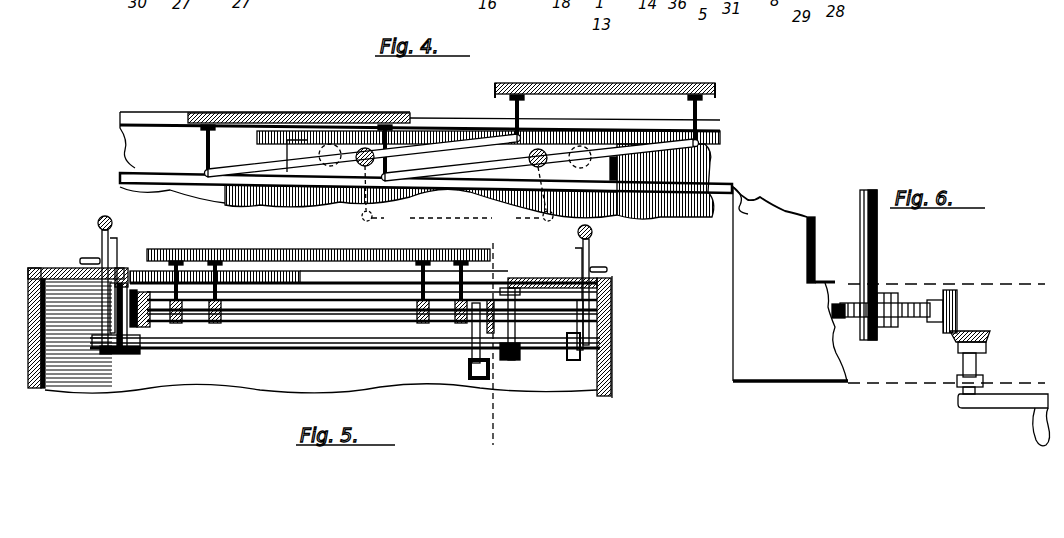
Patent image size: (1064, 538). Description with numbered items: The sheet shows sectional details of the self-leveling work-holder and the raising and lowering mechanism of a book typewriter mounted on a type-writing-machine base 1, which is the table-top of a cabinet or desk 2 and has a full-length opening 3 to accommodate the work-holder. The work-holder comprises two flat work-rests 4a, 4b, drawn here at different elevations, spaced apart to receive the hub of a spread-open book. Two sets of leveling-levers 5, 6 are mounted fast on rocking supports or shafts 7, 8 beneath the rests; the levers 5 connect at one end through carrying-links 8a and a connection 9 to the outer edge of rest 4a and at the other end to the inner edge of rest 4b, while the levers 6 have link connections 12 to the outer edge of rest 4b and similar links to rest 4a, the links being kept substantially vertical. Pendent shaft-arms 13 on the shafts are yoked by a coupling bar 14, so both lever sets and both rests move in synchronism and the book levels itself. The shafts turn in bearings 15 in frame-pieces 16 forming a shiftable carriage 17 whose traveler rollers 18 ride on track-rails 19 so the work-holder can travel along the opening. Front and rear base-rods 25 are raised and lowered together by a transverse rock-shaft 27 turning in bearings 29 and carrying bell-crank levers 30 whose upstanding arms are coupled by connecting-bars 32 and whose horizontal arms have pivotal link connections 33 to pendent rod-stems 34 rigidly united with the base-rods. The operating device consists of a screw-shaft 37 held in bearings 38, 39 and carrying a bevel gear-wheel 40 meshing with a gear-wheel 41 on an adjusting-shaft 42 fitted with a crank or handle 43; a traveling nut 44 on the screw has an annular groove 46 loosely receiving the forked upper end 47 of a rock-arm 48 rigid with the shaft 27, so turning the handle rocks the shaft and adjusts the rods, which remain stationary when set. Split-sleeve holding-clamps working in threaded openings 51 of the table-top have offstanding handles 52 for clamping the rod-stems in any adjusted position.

In FIG. 4, the type-writing-machine base 1 is at (175, 110).
In FIG. 5, the type-writing-machine base 1 is at (58, 261).
In FIG. 6, the type-writing-machine base 1 is at (731, 293).
In FIG. 4, the typewriter cabinet or desk 2 is at (723, 141).
In FIG. 5, the typewriter cabinet or desk 2 is at (603, 379).
In FIG. 6, the typewriter cabinet or desk 2 is at (809, 299).
In FIG. 4, the opening 3 is at (460, 125).
In FIG. 5, the opening 3 is at (308, 281).
In FIG. 6, the opening 3 is at (832, 241).
In FIG. 4, the work-rest 4a is at (283, 112).
In FIG. 5, the work-rest 4a is at (400, 252).
In FIG. 4, the work-rest 4b is at (601, 84).
In FIG. 4, the leveling-levers 5 is at (276, 154).
In FIG. 5, the leveling-levers 5 is at (195, 350).
In FIG. 4, the leveling-levers 6 is at (641, 137).
In FIG. 5, the leveling-levers 6 is at (224, 322).
In FIG. 4, the rocking support or shaft 7 is at (388, 140).
In FIG. 5, the rocking support or shaft 7 is at (340, 322).
In FIG. 4, the rocking support or shaft 8 is at (531, 237).
In FIG. 5, the rocking support or shaft 8 is at (493, 351).
In FIG. 4, the carrying-links 8a is at (524, 107).
In FIG. 5, the carrying-links 8a is at (470, 283).
In FIG. 4, the connection 9 is at (213, 125).
In FIG. 5, the connection 9 is at (466, 266).
In FIG. 4, the link connections 12 is at (422, 126).
In FIG. 5, the link connections 12 is at (428, 266).
In FIG. 5, the shaft-arms 13 is at (463, 335).
In FIG. 5, the coupling or connecting bar 14 is at (440, 425).
In FIG. 5, the bearings 15 is at (480, 376).
In FIG. 4, the frame-pieces 16 is at (611, 194).
In FIG. 5, the frame-pieces 16 is at (158, 350).
In FIG. 5, the shiftable carriage 17 is at (308, 327).
In FIG. 4, the traveler rollers 18 is at (366, 148).
In FIG. 5, the traveler rollers 18 is at (125, 312).
In FIG. 4, the track-rails 19 is at (457, 197).
In FIG. 5, the track-rails 19 is at (135, 355).
In FIG. 5, the base-rods 25 is at (109, 207).
In FIG. 5, the rock-shaft 27 is at (272, 352).
In FIG. 6, the rock-shaft 27 is at (860, 203).
In FIG. 5, the bearings 29 is at (108, 356).
In FIG. 5, the bell-crank levers 30 is at (105, 330).
In FIG. 5, the connecting-bars 32 is at (118, 282).
In FIG. 5, the pivotal link connections 33 is at (598, 333).
In FIG. 5, the rod-stems 34 is at (114, 242).
In FIG. 6, the screw-shaft 37 is at (914, 320).
In FIG. 6, the bearing 38 is at (833, 318).
In FIG. 6, the bearing 39 is at (934, 300).
In FIG. 6, the bevel gear-wheel 40 is at (958, 305).
In FIG. 6, the gear-wheel 41 is at (989, 334).
In FIG. 6, the adjusting-shaft 42 is at (983, 362).
In FIG. 6, the crank or handle 43 is at (1007, 410).
In FIG. 6, the traveling nut 44 is at (900, 298).
In FIG. 6, the annular groove 46 is at (882, 328).
In FIG. 6, the forked upper end 47 is at (887, 293).
In FIG. 6, the rock-arm 48 is at (863, 293).
In FIG. 5, the threaded openings 51 is at (76, 284).
In FIG. 5, the offstanding handles 52 is at (90, 258).